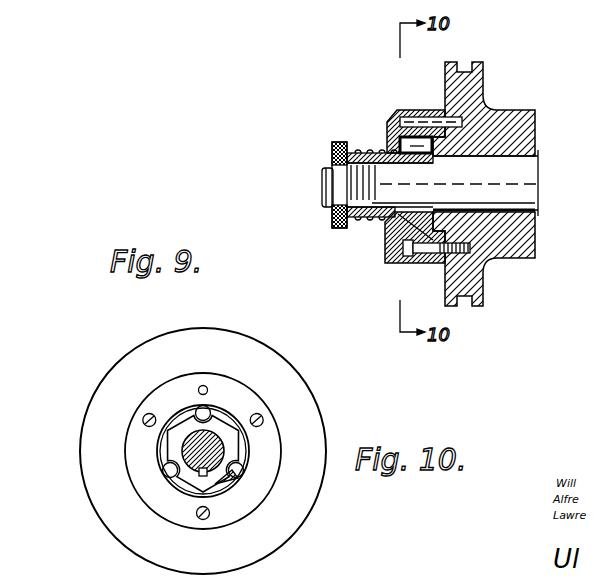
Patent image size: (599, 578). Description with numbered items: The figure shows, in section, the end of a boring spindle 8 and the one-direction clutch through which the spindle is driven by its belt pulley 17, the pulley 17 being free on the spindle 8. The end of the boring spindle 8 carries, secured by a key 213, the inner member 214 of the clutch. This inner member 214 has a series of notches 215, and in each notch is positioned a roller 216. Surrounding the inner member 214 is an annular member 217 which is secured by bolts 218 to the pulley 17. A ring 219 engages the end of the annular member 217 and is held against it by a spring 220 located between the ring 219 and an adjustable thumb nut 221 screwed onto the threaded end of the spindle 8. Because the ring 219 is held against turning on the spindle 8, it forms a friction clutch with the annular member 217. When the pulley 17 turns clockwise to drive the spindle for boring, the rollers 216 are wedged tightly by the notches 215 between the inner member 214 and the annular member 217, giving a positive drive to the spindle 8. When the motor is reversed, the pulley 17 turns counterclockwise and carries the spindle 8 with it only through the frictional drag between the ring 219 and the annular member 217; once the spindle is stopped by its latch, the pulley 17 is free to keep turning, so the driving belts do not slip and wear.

In FIG. 9, the boring spindle 8 is at (183, 445).
In FIG. 10, the boring spindle 8 is at (525, 170).
In FIG. 9, the pulley 17 is at (196, 333).
In FIG. 10, the pulley 17 is at (477, 63).
In FIG. 9, the key 213 is at (202, 476).
In FIG. 10, the key 213 is at (388, 224).
In FIG. 9, the inner member 214 is at (237, 442).
In FIG. 10, the inner member 214 is at (396, 218).
In FIG. 9, the notches 215 is at (232, 418).
In FIG. 9, the roller 216 is at (206, 407).
In FIG. 10, the roller 216 is at (418, 144).
In FIG. 9, the annular member 217 is at (175, 388).
In FIG. 9, the bolts 218 is at (263, 413).
In FIG. 10, the bolts 218 is at (428, 252).
In FIG. 10, the ring 219 is at (393, 112).
In FIG. 10, the spring 220 is at (356, 152).
In FIG. 10, the thumb nut 221 is at (332, 149).